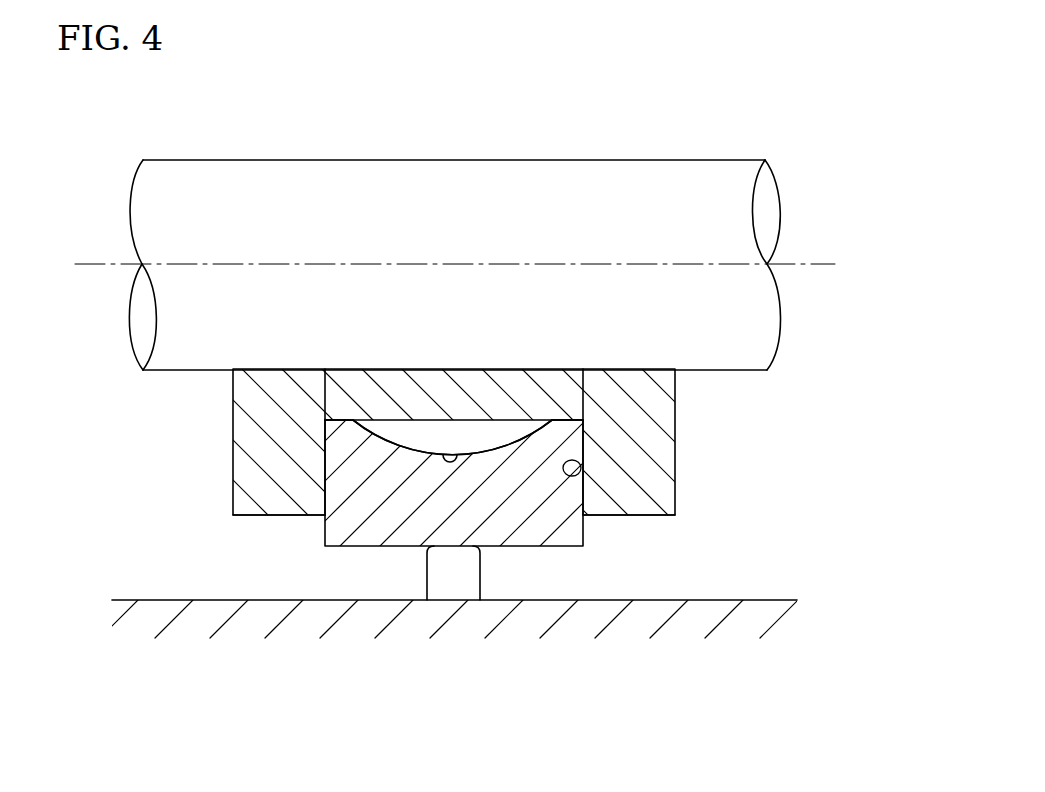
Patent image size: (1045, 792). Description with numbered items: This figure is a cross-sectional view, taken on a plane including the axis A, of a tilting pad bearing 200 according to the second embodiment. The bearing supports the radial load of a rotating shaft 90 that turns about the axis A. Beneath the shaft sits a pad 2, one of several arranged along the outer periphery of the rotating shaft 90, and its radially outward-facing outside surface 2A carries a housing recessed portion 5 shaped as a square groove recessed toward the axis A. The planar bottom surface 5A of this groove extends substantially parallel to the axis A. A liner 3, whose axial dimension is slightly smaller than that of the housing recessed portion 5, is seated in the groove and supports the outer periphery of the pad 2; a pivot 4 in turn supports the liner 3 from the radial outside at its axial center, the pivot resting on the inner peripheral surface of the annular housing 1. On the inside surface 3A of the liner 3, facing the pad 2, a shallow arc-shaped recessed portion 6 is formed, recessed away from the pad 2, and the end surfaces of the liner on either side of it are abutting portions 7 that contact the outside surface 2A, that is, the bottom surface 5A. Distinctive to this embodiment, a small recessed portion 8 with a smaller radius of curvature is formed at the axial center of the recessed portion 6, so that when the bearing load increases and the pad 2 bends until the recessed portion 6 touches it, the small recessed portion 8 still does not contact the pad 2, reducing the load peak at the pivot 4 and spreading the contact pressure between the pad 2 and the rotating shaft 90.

The housing 1 is at (764, 613).
The pad 2 is at (272, 488).
The outside surface 2A is at (634, 516).
The liner 3 is at (526, 464).
The inside surface 3A is at (345, 418).
The pivot 4 is at (458, 572).
The housing recessed portion 5 is at (575, 475).
The bottom surface 5A is at (460, 424).
The recessed portion 6 is at (478, 437).
The abutting portions 7 is at (341, 417).
The small recessed portion 8 is at (440, 458).
The rotating shaft 90 is at (663, 182).
The tilting pad bearing 200 is at (460, 409).
The axis A is at (810, 263).